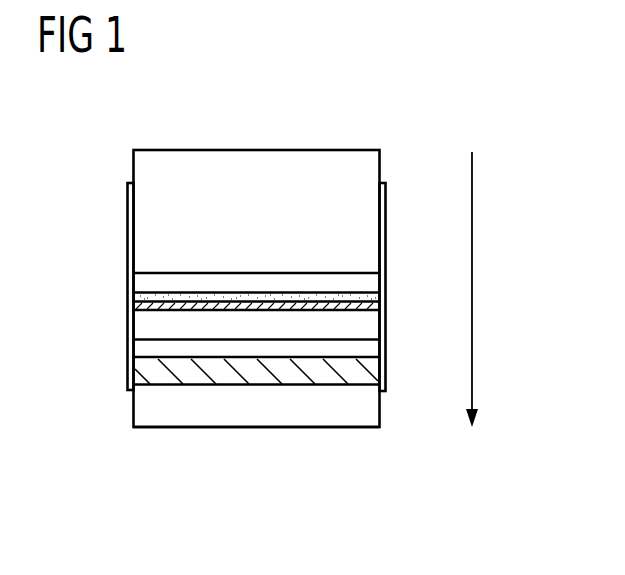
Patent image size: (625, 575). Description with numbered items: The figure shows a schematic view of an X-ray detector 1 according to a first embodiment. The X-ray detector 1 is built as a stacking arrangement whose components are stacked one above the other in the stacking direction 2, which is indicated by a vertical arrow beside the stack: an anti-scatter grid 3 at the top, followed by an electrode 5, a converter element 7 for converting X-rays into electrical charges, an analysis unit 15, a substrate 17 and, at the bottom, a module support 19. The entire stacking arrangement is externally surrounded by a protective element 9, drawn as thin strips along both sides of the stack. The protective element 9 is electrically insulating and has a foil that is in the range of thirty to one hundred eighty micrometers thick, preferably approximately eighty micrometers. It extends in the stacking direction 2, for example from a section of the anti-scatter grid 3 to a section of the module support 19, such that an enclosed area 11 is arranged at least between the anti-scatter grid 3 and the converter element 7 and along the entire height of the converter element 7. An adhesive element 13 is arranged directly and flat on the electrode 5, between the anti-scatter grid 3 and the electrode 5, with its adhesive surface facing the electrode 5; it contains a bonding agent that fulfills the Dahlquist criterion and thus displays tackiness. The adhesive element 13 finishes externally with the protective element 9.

The X-ray detector 1 is at (227, 115).
The stacking direction 2 is at (473, 280).
The anti-scatter grid 3 is at (372, 170).
The electrode 5 is at (131, 308).
The converter element 7 is at (372, 327).
The protective element 9 is at (128, 232).
The enclosed area 11 is at (372, 286).
The adhesive element 13 is at (131, 297).
The analysis unit 15 is at (133, 351).
The substrate 17 is at (372, 376).
The module support 19 is at (372, 413).